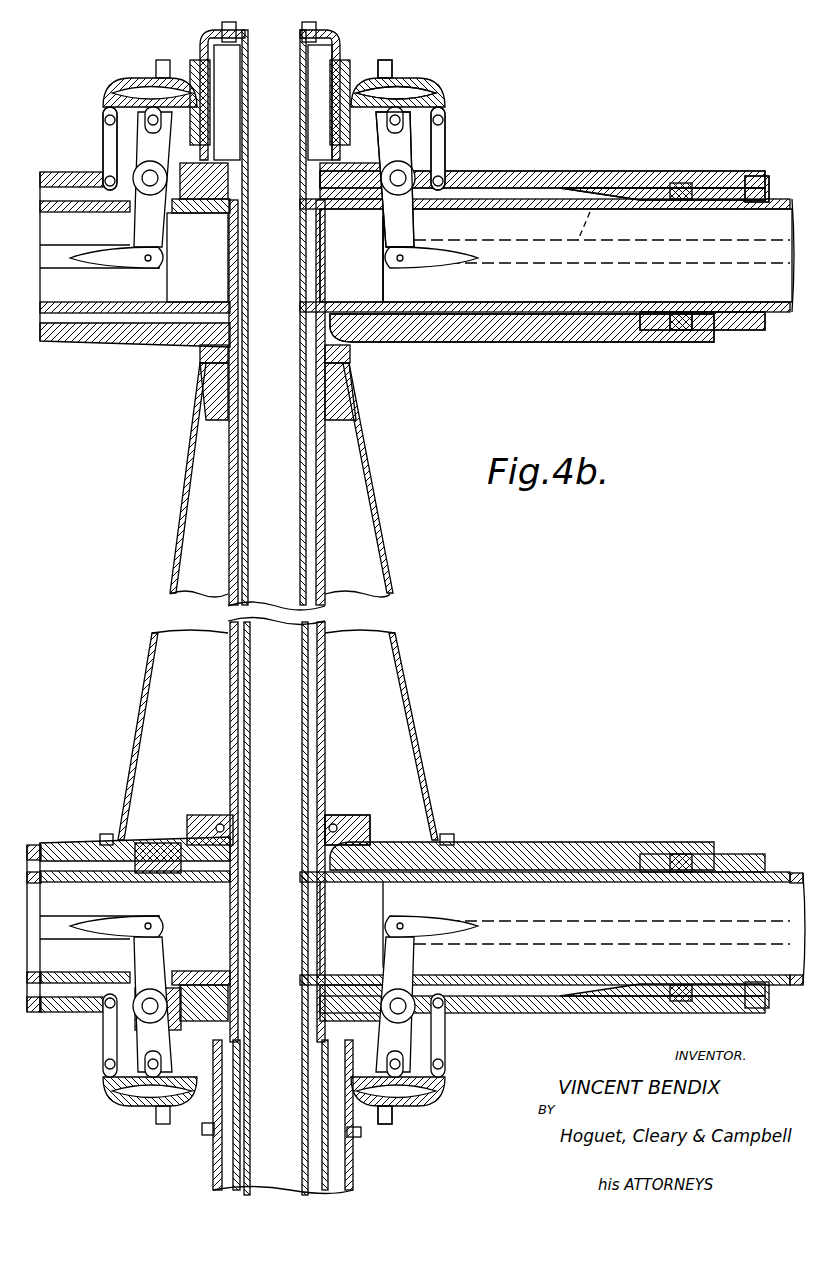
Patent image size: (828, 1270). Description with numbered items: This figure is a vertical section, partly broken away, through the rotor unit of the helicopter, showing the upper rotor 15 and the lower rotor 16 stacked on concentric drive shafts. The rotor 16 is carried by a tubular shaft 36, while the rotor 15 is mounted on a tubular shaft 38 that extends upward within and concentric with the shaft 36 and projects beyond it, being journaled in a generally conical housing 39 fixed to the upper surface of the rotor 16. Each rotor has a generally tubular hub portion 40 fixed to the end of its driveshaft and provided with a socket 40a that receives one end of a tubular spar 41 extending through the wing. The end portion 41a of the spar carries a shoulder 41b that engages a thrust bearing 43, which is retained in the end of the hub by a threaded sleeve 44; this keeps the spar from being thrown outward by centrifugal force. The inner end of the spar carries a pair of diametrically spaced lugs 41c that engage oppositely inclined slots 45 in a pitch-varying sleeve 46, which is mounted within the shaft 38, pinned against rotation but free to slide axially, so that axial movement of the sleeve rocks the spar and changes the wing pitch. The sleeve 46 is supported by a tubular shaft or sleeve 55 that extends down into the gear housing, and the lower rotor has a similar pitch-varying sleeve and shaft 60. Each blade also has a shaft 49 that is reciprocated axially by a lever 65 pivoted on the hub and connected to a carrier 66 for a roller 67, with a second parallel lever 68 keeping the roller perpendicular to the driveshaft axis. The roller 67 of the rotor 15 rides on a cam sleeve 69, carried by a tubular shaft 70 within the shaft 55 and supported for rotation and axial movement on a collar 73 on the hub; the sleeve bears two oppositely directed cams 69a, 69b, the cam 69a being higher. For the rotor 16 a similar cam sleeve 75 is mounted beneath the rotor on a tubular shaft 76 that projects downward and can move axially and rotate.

The rotor 15 is at (500, 163).
The rotor 16 is at (630, 843).
The tubular shaft 36 is at (378, 838).
The tubular shaft 38 is at (325, 498).
The conical housing 39 is at (375, 543).
The hub portion 40 is at (548, 344).
The socket 40a is at (452, 344).
The tubular spar 41 is at (545, 200).
The end portion of the spar 41a is at (640, 331).
The shoulder 41b is at (650, 176).
The lugs 41c is at (330, 300).
The thrust bearing 43 is at (685, 331).
The threaded sleeve 44 is at (768, 180).
The inclined slots 45 is at (300, 305).
The pitch-varying sleeve 46 is at (228, 262).
The shaft 49 is at (594, 185).
The tubular shaft or sleeve 55 is at (235, 445).
The pitch-varying sleeve and shaft 60 is at (222, 1170).
The lever 65 is at (442, 136).
The carrier 66 is at (446, 92).
The roller 67 is at (395, 70).
The second parallel lever 68 is at (437, 158).
The cam sleeve 69 is at (200, 68).
The cam 69a is at (187, 120).
The cam 69b is at (350, 82).
The tubular shaft 70 is at (246, 52).
The collar 73 is at (318, 37).
The cam sleeve 75 is at (366, 1112).
The tubular shaft 76 is at (353, 1180).